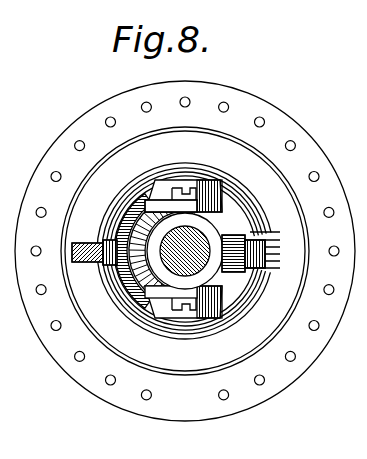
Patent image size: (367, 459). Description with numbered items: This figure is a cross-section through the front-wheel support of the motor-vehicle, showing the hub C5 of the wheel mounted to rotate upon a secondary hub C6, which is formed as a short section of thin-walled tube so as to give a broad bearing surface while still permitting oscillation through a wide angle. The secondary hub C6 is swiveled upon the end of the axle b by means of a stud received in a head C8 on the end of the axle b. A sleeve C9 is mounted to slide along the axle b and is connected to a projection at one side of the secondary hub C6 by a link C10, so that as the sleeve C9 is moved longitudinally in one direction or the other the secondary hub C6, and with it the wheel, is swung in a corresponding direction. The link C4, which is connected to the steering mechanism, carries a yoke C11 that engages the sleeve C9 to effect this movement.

The link C4 is at (89, 263).
The hub of the wheel C5 is at (185, 251).
The secondary hub C6 is at (184, 255).
The head C8 is at (212, 209).
The sleeve C9 is at (210, 226).
The link C10 is at (246, 263).
The yoke C11 is at (148, 216).
The axle b is at (173, 272).